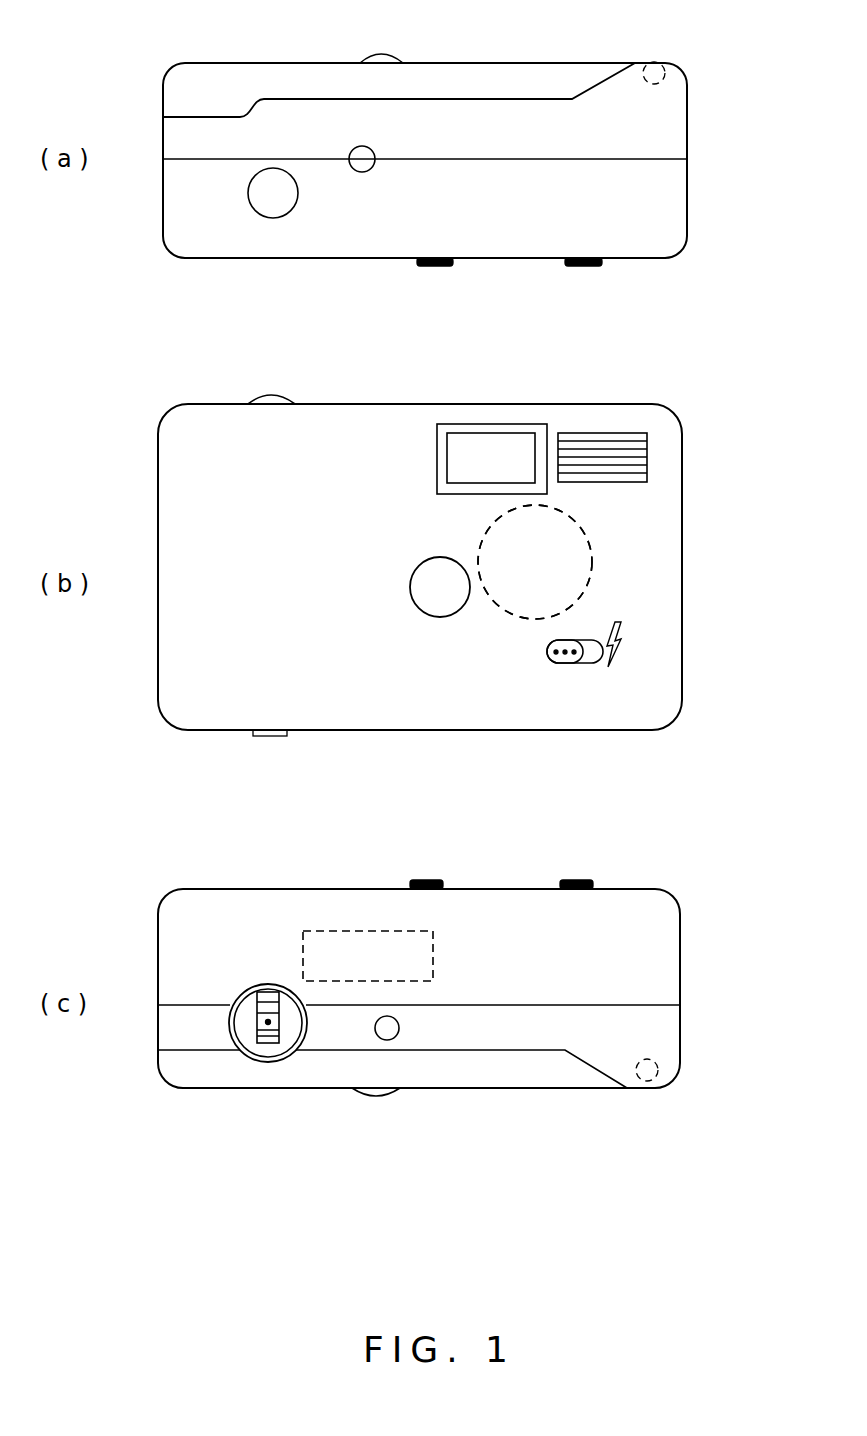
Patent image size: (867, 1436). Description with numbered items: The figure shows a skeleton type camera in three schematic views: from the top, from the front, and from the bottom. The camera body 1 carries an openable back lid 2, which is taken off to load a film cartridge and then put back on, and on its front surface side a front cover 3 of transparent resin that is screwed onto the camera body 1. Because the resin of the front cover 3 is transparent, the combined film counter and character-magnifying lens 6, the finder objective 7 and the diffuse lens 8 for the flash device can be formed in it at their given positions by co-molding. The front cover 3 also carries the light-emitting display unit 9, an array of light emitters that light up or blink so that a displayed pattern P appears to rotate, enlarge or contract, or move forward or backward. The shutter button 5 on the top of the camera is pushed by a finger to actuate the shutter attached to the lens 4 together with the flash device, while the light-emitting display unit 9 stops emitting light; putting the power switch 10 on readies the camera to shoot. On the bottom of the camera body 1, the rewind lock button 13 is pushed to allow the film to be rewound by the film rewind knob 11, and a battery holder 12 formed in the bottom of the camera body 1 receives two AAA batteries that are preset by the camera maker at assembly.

The camera body 1 is at (687, 137).
The back lid 2 is at (522, 61).
The front cover 3 is at (687, 223).
The lens 4 is at (438, 615).
The shutter button 5 is at (260, 211).
The combined film counter and character-magnifying lens 6 is at (355, 150).
The finder objective 7 is at (487, 433).
The diffuse lens for flash device 8 is at (612, 437).
The light-emitting display unit 9 is at (587, 587).
The displayed pattern P is at (593, 555).
The power switch 10 is at (568, 664).
The film rewind knob 11 is at (282, 1030).
The battery holder 12 is at (320, 943).
The rewind lock button 13 is at (399, 1028).